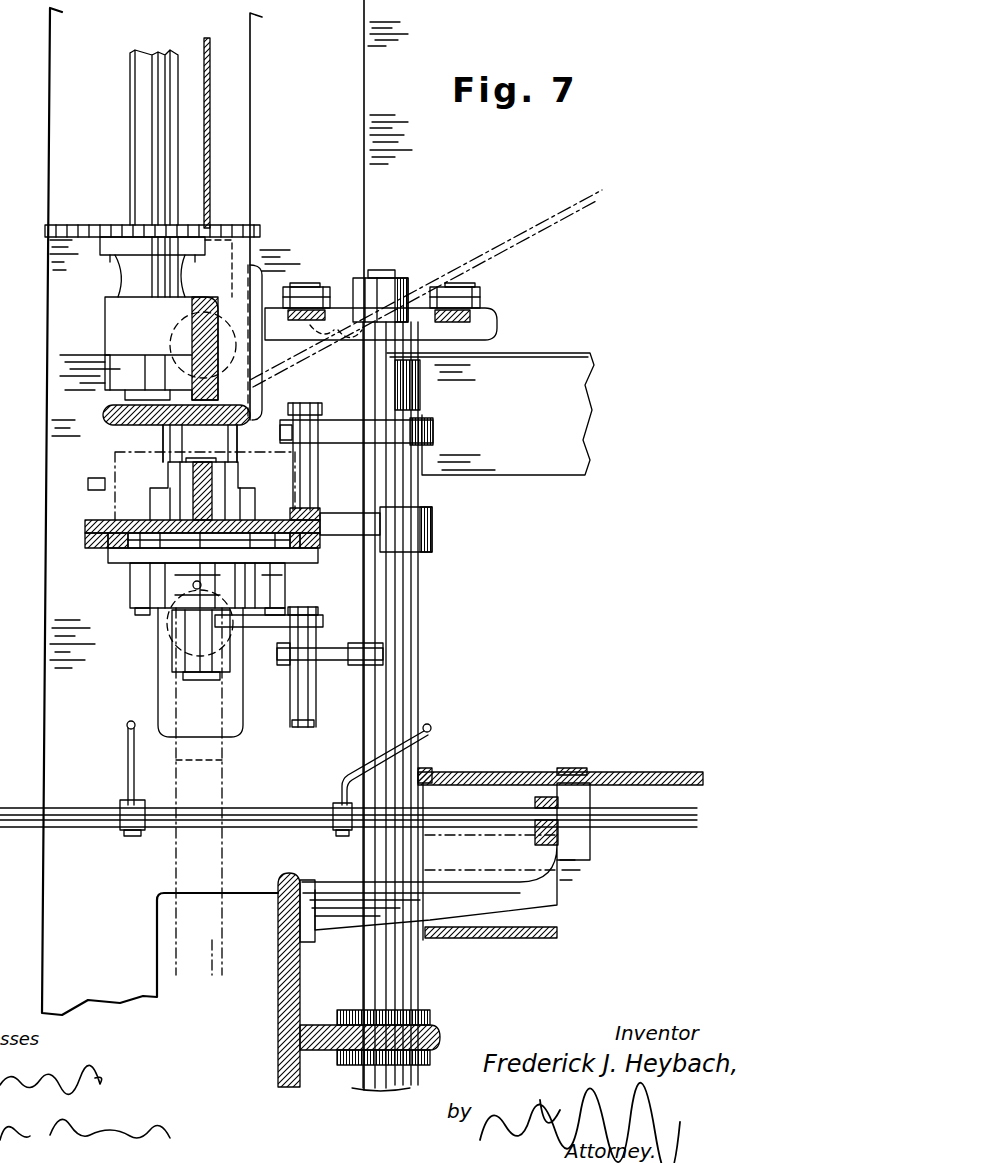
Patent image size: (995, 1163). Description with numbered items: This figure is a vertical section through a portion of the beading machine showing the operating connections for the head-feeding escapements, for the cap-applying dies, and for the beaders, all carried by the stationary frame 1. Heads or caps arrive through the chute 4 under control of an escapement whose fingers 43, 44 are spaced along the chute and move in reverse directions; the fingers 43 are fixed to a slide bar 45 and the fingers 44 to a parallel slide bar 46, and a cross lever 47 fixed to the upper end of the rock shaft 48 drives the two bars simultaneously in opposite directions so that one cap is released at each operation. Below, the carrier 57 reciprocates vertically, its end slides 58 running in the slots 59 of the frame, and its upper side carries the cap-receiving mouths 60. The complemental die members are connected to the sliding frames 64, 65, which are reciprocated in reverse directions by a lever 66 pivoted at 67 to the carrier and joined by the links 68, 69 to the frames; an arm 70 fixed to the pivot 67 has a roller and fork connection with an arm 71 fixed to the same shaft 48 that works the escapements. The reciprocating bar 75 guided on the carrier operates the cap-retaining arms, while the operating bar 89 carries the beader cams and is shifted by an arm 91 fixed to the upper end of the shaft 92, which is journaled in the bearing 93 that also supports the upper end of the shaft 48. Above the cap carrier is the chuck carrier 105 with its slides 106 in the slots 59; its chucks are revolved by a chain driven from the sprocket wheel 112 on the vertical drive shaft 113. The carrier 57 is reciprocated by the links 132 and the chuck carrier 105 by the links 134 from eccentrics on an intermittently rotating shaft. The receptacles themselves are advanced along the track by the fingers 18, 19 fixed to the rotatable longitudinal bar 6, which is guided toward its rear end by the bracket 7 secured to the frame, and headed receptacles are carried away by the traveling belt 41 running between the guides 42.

The frame 1 is at (46, 595).
The chute 4 is at (489, 248).
The longitudinal bar 6 is at (14, 812).
The bracket 7 is at (496, 905).
The finger 18 is at (432, 728).
The finger 19 is at (128, 752).
The traveling belt 41 is at (500, 773).
The guide 42 is at (425, 772).
The escapement finger 43 is at (422, 300).
The escapement finger 44 is at (338, 340).
The slide bar 45 is at (492, 322).
The slide bar 46 is at (290, 312).
The cross lever 47 is at (410, 290).
The rock shaft 48 is at (375, 480).
The carrier 57 is at (93, 522).
The slide 58 is at (157, 490).
The slot 59 is at (249, 209).
The mouth 60 is at (115, 466).
The sliding frame 64 is at (88, 550).
The sliding frame 65 is at (112, 560).
The lever 66 is at (132, 602).
The pivot 67 is at (185, 638).
The link 68 is at (135, 580).
The link 69 is at (282, 578).
The arm 70 is at (320, 622).
The arm 71 is at (340, 660).
The reciprocating bar 75 is at (88, 484).
The operating bar 89 is at (292, 508).
The arm 91 is at (355, 437).
The shaft 92 is at (418, 642).
The bearing 93 is at (398, 531).
The chuck carrier 105 is at (103, 412).
The slide 106 is at (232, 268).
The sprocket wheel 112 is at (46, 232).
The vertical drive shaft 113 is at (142, 147).
The link 132 is at (213, 950).
The link 134 is at (232, 442).